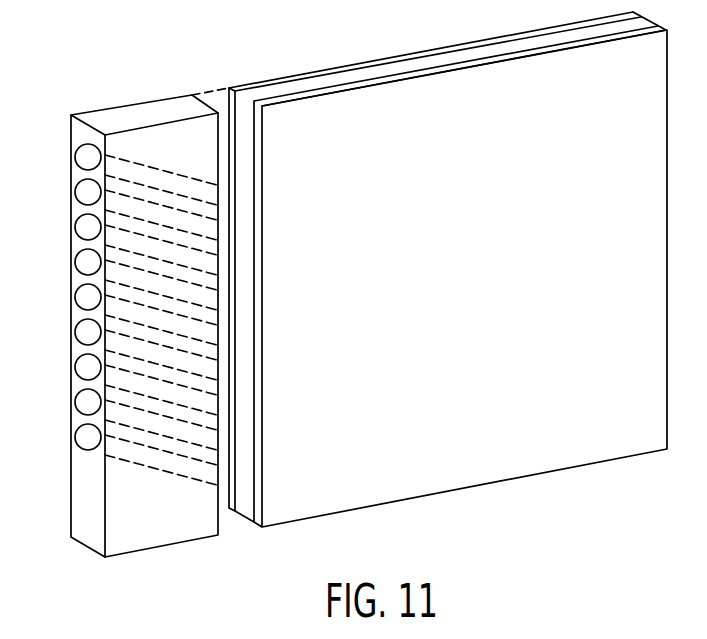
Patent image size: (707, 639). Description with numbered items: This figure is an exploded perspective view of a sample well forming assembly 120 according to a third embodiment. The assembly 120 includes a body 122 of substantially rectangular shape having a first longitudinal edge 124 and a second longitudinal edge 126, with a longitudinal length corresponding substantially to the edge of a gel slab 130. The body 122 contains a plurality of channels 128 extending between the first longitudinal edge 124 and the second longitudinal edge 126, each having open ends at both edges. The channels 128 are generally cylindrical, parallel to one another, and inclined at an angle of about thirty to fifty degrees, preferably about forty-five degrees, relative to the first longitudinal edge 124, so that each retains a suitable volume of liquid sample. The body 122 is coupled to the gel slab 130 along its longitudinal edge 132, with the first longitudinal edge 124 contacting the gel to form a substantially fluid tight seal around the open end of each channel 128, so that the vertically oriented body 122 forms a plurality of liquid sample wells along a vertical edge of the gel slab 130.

The sample well forming assembly 120 is at (168, 74).
The body 122 is at (157, 535).
The first longitudinal edge 124 is at (221, 518).
The second longitudinal edge 126 is at (85, 517).
The channels 128 is at (90, 438).
The gel slab 130 is at (490, 465).
The longitudinal edge 132 is at (248, 470).